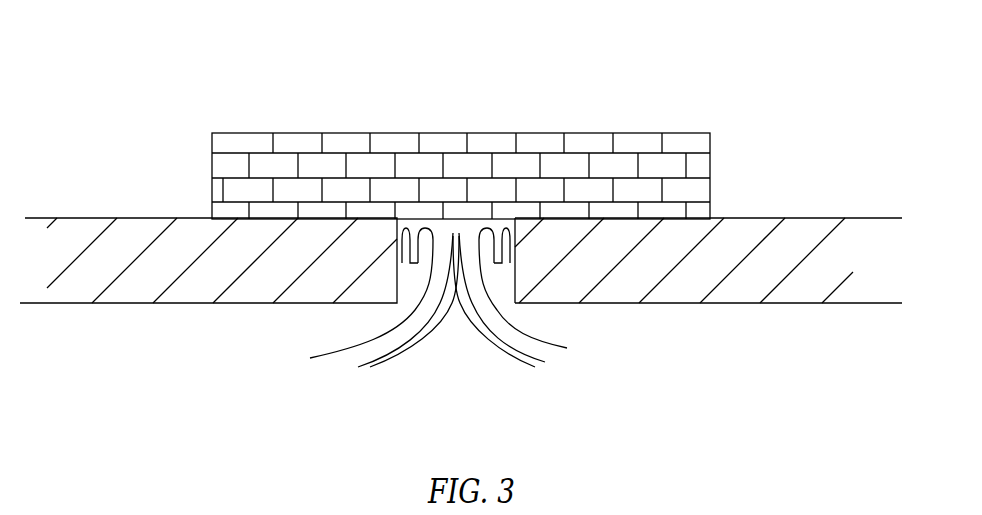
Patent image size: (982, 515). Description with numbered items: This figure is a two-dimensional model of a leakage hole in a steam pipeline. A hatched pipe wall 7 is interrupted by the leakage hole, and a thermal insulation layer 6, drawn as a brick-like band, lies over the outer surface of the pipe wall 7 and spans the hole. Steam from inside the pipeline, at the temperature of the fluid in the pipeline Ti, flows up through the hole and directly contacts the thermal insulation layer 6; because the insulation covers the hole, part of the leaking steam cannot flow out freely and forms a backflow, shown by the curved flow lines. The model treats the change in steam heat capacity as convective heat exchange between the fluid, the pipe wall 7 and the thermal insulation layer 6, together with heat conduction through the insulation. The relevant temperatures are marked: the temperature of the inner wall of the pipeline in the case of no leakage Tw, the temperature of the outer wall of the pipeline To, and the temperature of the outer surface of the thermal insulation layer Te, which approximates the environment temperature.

The thermal insulation layer 6 is at (662, 165).
The pipe wall 7 is at (698, 275).
The temperature of the outer surface of the thermal insulation layer Te is at (468, 75).
The temperature of an outer wall of the pipeline To is at (833, 170).
The temperature of the inner wall of the pipeline in the case of no leakage Tw is at (97, 362).
The temperature of the fluid in the pipeline Ti is at (459, 392).